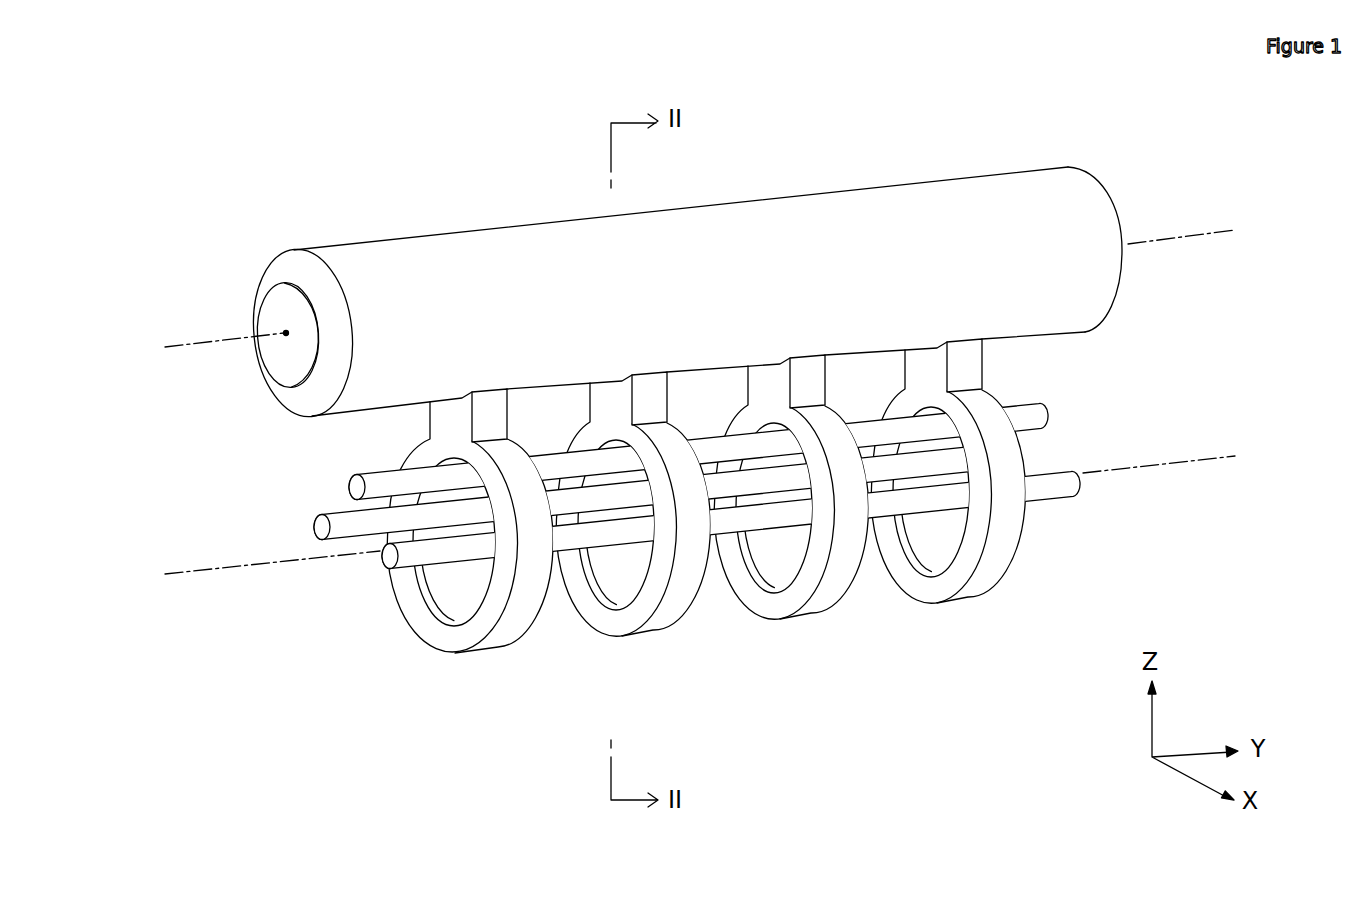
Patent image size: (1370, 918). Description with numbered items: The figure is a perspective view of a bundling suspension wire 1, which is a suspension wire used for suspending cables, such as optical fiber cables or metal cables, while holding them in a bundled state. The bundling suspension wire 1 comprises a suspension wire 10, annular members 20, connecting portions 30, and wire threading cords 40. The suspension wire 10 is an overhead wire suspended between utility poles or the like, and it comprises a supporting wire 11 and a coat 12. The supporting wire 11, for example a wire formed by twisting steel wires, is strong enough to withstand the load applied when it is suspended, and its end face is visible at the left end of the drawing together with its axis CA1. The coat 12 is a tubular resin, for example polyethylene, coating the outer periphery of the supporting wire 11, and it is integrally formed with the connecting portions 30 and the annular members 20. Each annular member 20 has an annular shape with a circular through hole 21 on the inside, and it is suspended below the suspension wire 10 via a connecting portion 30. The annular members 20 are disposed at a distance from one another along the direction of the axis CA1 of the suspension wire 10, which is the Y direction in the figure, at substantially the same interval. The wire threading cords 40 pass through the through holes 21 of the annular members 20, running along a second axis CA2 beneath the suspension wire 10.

The bundling suspension wire 1 is at (1029, 85).
The suspension wire 10 is at (888, 162).
The supporting wire 11 is at (272, 303).
The coat 12 is at (296, 249).
The annular member 20 is at (492, 648).
The through hole 21 is at (463, 615).
The connecting portion 30 is at (986, 372).
The wire threading cord 40 is at (383, 556).
The axis of the suspension wire CA1 is at (665, 297).
The central axis of wires CA2 is at (665, 523).